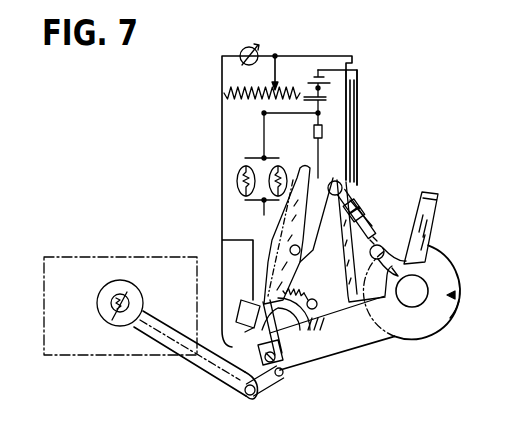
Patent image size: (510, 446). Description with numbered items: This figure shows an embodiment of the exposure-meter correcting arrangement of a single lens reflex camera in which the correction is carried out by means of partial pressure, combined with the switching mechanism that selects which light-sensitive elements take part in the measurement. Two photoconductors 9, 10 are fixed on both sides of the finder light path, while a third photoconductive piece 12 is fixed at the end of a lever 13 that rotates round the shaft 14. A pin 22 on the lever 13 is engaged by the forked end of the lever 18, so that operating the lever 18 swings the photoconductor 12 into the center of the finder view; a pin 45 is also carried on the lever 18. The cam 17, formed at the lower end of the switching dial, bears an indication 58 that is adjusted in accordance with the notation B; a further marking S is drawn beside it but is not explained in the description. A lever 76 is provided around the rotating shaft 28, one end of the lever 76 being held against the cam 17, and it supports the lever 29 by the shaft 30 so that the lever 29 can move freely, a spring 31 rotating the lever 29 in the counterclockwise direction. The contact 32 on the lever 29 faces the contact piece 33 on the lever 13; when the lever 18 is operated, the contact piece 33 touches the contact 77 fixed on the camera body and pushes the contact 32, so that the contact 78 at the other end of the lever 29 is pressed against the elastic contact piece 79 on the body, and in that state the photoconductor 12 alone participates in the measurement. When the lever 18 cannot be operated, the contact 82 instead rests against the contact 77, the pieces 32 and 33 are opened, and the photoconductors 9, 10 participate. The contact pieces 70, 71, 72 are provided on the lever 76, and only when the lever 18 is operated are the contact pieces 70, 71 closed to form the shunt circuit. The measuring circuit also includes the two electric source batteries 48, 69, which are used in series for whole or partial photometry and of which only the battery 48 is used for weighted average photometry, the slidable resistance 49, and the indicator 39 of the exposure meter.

The indicator of the exposure meter 39 is at (250, 51).
The electric source battery 69 is at (313, 80).
The slidable resistance 49 is at (259, 99).
The electric source battery 48 is at (356, 108).
The elastic contact piece 79 is at (347, 145).
The contact 78 is at (312, 168).
The rotating shaft 28 is at (355, 162).
The photoconductor 10 is at (245, 167).
The photoconductor 9 is at (281, 167).
The lever 29 is at (297, 212).
The contact piece 70 is at (368, 213).
The contact piece 72 is at (373, 217).
The contact piece 71 is at (376, 244).
The lever 76 is at (346, 251).
The shaft 30 is at (301, 235).
The spring 31 is at (302, 291).
The pin 45 is at (402, 263).
The contact 32 is at (311, 322).
The contact piece 33 is at (289, 330).
The contact 82 is at (242, 324).
The contact 77 is at (262, 346).
The pin 22 is at (280, 377).
The shaft 14 is at (247, 398).
The lever 18 is at (330, 347).
The cam 17 is at (395, 338).
The indication 58 is at (462, 306).
The third photoconductive piece 12 is at (120, 313).
The lever 13 is at (157, 342).
The notation B is at (433, 228).
The direction marker S is at (463, 295).